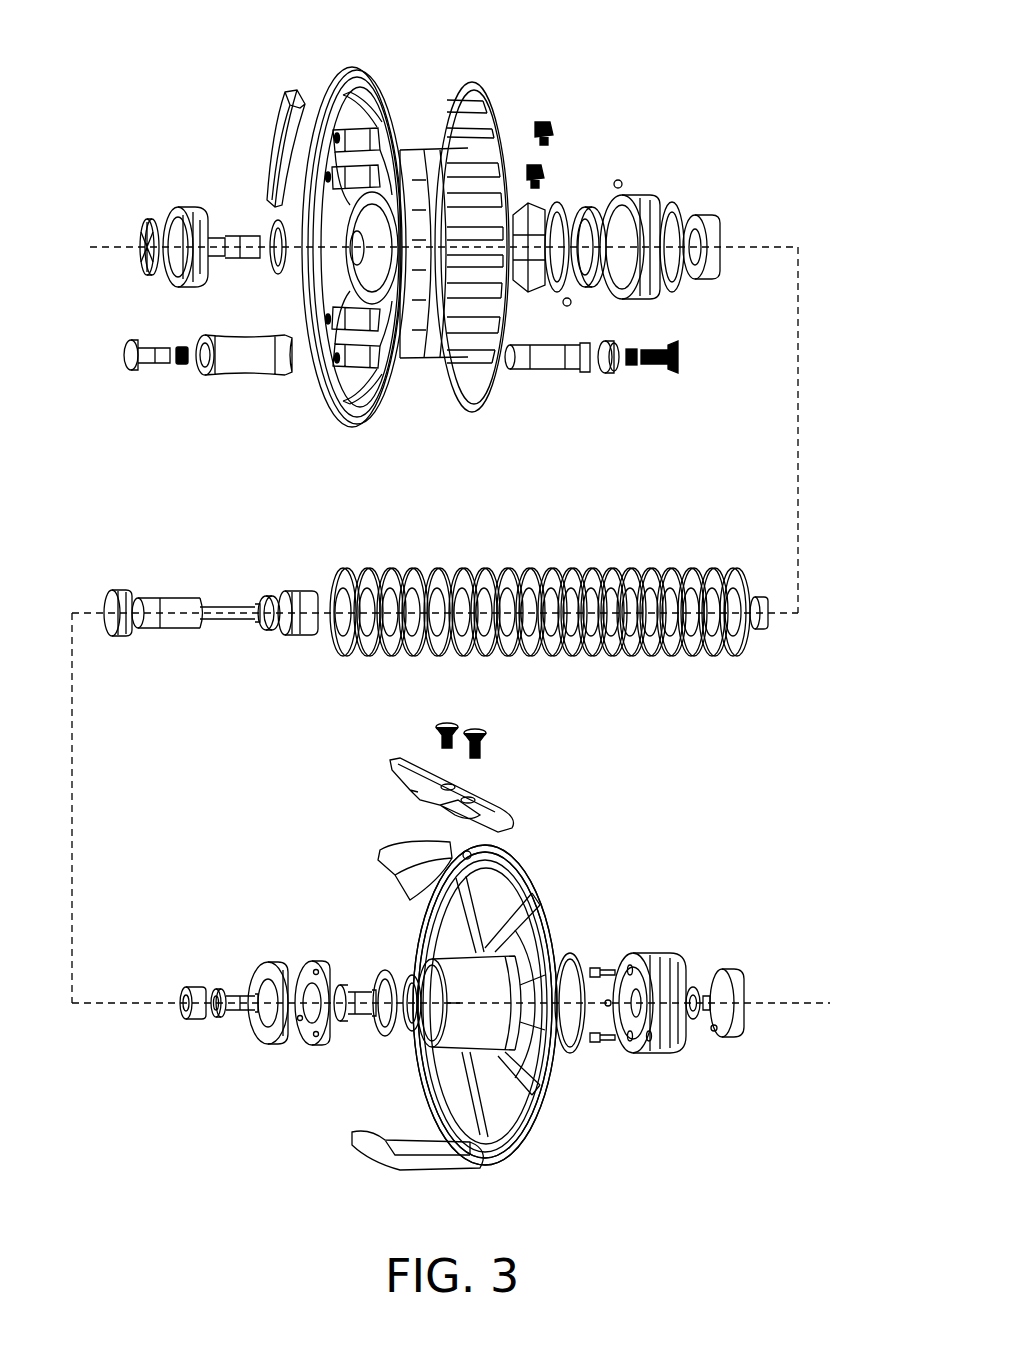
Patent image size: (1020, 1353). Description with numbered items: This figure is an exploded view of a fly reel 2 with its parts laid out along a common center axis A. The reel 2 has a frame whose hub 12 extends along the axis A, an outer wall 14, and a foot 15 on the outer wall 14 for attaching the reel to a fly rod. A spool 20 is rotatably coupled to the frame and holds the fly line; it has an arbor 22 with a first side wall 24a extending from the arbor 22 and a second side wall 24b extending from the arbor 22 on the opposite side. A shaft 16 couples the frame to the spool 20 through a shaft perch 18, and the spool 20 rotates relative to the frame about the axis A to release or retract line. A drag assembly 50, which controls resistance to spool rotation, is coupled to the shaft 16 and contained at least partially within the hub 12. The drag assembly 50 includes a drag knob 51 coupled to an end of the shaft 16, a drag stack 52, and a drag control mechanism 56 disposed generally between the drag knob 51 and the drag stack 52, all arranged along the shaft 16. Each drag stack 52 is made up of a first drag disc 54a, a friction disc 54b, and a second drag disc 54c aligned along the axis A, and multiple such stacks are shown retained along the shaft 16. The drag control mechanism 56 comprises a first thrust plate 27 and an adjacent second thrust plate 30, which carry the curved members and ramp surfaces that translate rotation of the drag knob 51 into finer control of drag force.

The reel 2 is at (133, 82).
The center axis A is at (112, 245).
The hub 12 is at (478, 1026).
The outer wall 14 is at (512, 862).
The foot 15 is at (500, 813).
The shaft 16 is at (185, 600).
The shaft perch 18 is at (532, 290).
The spool 20 is at (352, 58).
The arbor 22 is at (418, 398).
The first side wall 24a is at (330, 398).
The second side wall 24b is at (490, 390).
The first thrust plate 27 is at (278, 963).
The second thrust plate 30 is at (320, 962).
The drag assembly 50 is at (323, 680).
The drag knob 51 is at (655, 952).
The drag stack 52 is at (740, 557).
The first drag disc 54a is at (393, 658).
The friction disc 54b is at (410, 657).
The second drag disc 54c is at (440, 656).
The drag control mechanism 56 is at (290, 1052).